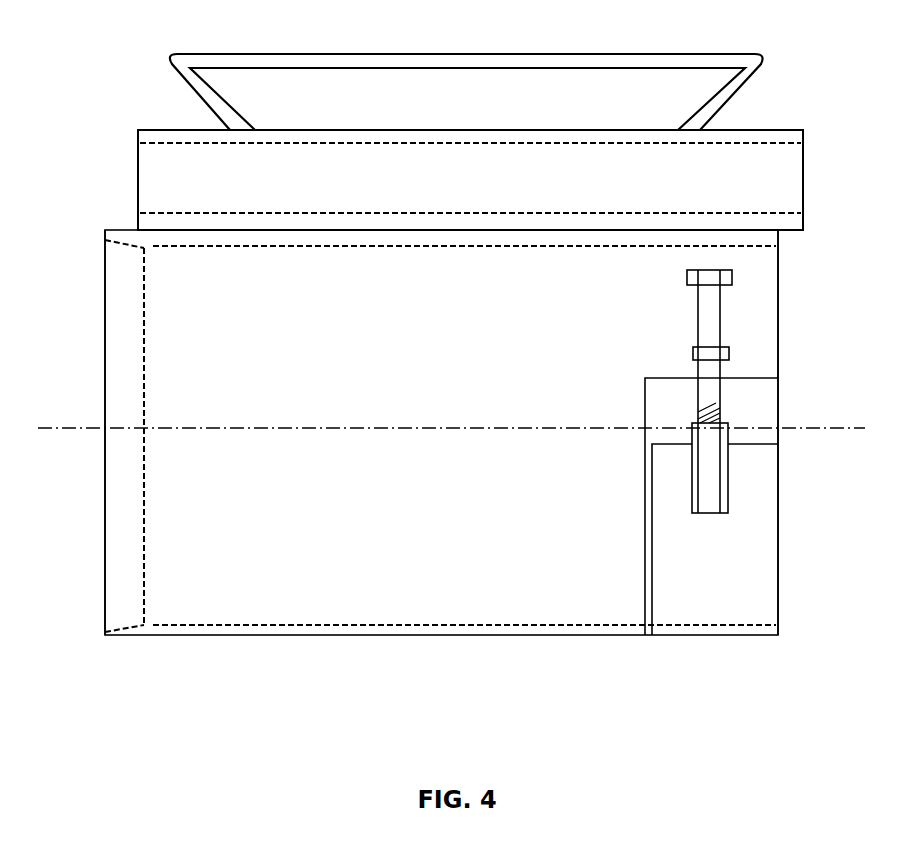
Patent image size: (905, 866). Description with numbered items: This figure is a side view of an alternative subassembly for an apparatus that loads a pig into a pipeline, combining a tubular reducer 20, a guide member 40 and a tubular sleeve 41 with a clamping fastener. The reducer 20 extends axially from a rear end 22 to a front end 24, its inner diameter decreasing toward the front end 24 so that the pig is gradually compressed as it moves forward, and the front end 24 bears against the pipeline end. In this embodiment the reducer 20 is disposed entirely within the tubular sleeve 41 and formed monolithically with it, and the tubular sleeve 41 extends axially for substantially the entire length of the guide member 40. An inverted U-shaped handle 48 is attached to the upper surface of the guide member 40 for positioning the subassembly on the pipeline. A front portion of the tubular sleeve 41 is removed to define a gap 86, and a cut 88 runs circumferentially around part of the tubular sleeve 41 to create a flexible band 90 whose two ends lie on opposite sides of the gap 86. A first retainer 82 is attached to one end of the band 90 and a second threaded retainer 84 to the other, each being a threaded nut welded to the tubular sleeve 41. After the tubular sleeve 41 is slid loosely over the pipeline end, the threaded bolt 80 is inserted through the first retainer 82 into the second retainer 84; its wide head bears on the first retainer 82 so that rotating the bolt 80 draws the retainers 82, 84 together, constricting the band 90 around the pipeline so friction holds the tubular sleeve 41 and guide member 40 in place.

The tubular reducer 20 is at (128, 639).
The rear end 22 is at (105, 637).
The front end 24 is at (145, 634).
The guide member 40 is at (790, 129).
The tubular sleeve 41 is at (446, 636).
The handle 48 is at (478, 54).
The threaded bolt 80 is at (698, 313).
The first retainer 82 is at (693, 353).
The second retainer 84 is at (712, 514).
The gap 86 is at (755, 405).
The cut 88 is at (648, 637).
The flexible band 90 is at (779, 540).